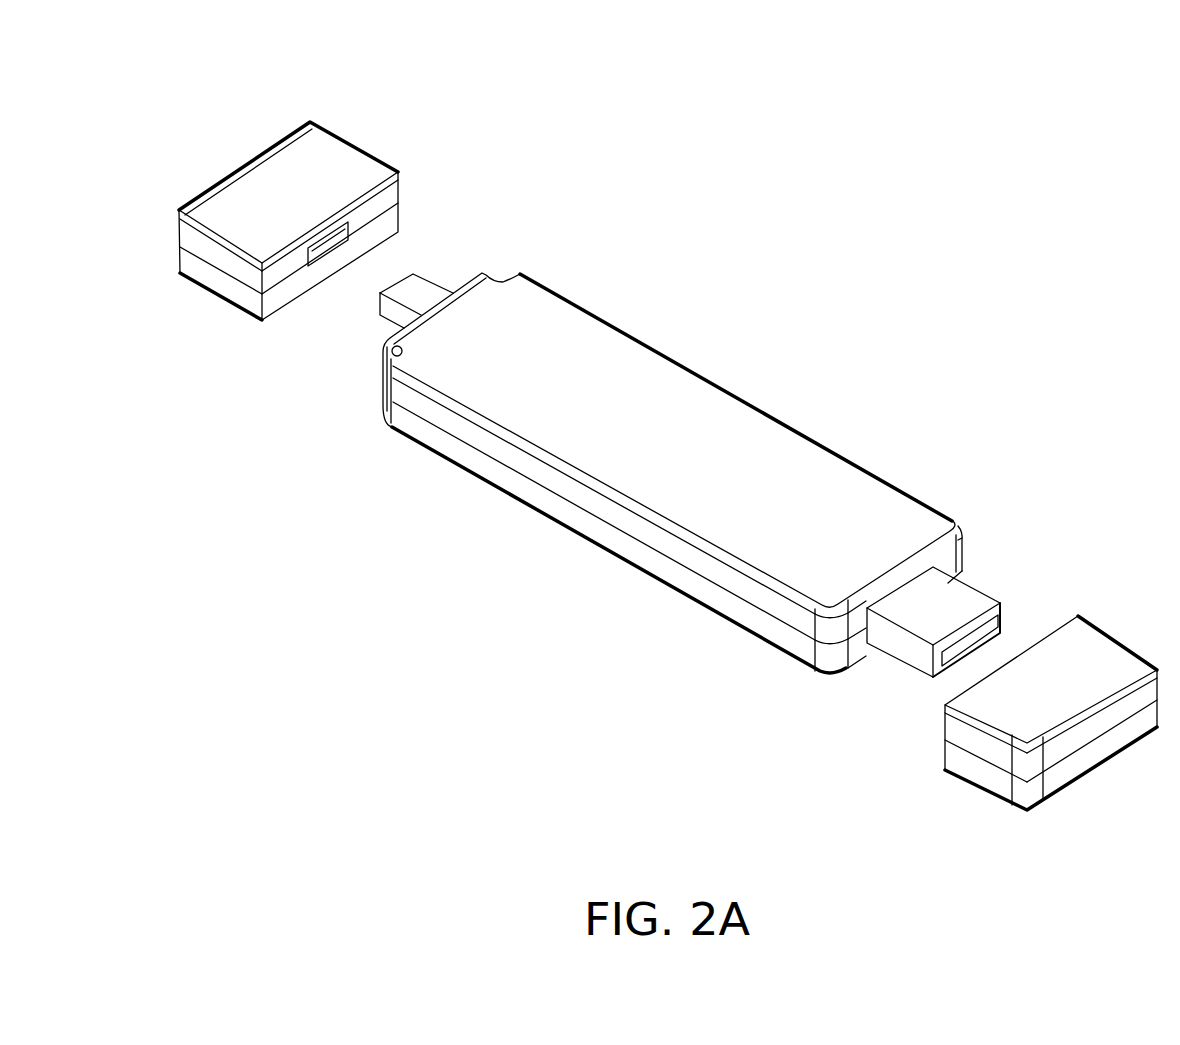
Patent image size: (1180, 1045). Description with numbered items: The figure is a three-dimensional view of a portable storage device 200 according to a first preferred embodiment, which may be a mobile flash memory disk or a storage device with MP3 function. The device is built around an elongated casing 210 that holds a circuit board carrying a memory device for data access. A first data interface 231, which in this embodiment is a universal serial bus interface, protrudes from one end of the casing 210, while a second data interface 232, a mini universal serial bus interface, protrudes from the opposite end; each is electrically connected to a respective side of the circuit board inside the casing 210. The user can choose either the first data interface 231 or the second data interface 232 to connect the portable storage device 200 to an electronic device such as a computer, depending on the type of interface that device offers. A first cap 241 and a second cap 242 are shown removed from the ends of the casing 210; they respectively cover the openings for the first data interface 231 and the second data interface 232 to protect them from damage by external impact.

The portable storage device 200 is at (322, 646).
The casing 210 is at (608, 360).
The first data interface 231 is at (958, 610).
The second data interface 232 is at (420, 293).
The first cap 241 is at (981, 762).
The second cap 242 is at (337, 167).